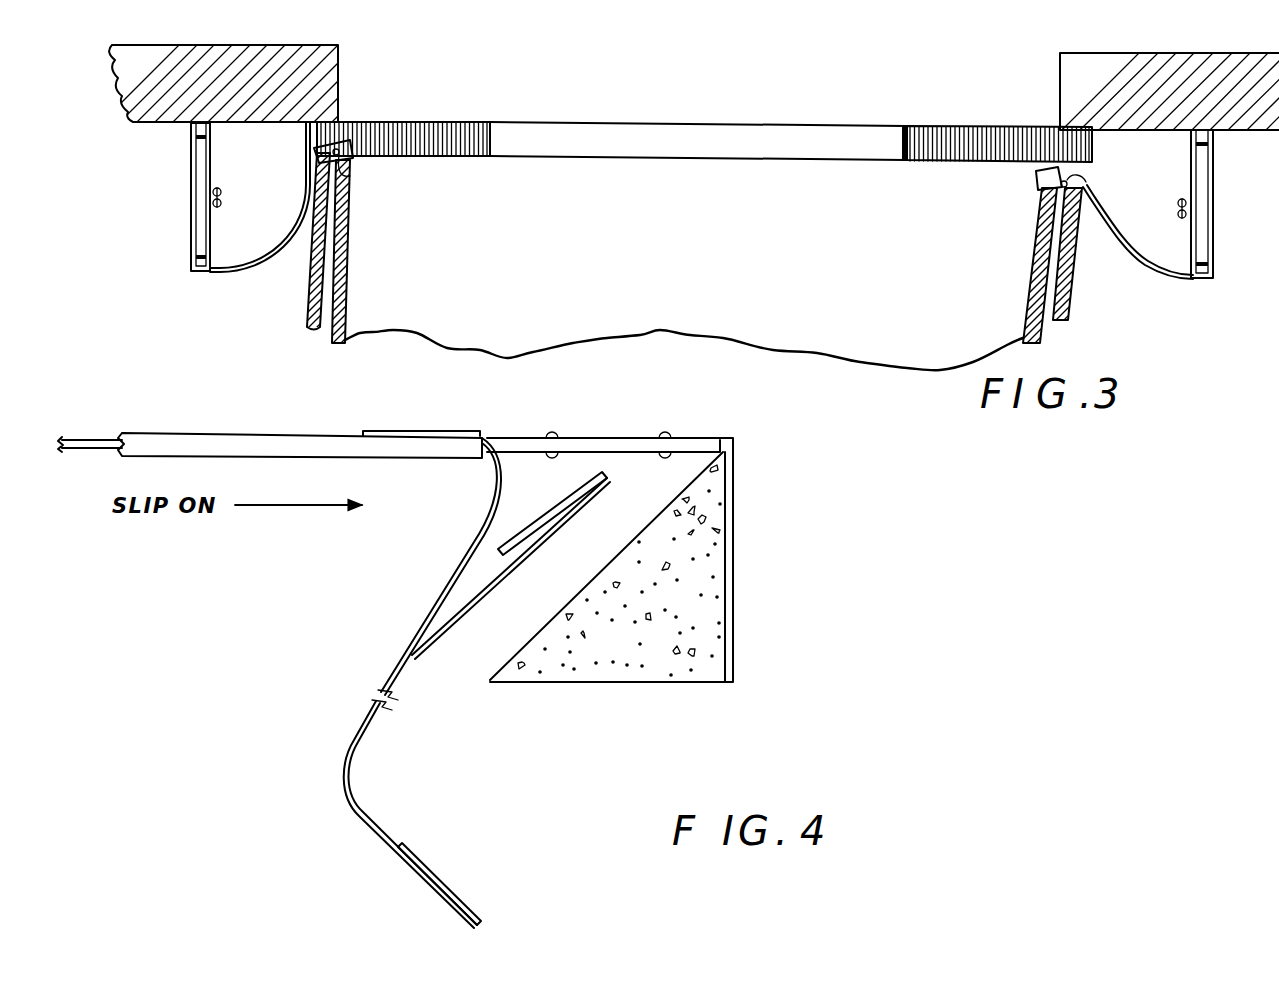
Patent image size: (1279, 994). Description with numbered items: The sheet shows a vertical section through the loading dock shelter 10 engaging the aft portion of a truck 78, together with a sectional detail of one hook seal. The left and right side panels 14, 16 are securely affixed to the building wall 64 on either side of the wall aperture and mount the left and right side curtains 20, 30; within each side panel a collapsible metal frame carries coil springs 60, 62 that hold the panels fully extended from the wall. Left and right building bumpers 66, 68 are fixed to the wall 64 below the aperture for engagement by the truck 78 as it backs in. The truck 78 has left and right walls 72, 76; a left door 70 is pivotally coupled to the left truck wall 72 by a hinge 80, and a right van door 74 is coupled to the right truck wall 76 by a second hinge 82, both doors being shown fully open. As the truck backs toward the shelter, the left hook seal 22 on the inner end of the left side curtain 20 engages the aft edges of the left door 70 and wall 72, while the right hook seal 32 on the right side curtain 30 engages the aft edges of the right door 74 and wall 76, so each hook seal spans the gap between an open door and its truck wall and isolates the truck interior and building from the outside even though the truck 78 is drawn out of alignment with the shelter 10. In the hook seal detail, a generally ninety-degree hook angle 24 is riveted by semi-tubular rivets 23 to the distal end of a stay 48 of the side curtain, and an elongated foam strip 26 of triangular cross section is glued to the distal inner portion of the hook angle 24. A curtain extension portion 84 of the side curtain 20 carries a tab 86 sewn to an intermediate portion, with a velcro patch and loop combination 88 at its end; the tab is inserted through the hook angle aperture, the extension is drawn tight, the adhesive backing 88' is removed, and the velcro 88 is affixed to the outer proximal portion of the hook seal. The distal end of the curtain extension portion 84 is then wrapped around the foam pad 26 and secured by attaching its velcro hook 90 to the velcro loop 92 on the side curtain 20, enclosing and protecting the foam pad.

In FIG. 3, the loading dock shelter 10 is at (152, 184).
In FIG. 3, the left side panel 14 is at (186, 226).
In FIG. 3, the right side panel 16 is at (1205, 192).
In FIG. 3, the left side curtain 20 is at (252, 273).
In FIG. 4, the left side curtain 20 is at (290, 585).
In FIG. 3, the left hook seal 22 is at (353, 158).
In FIG. 4, the left hook seal 22 is at (738, 568).
In FIG. 4, the semi-tubular rivets 23 is at (667, 436).
In FIG. 4, the hook angle 24 is at (735, 497).
In FIG. 4, the foam strip 26 is at (603, 662).
In FIG. 3, the right side curtain 30 is at (1133, 268).
In FIG. 3, the right hook seal 32 is at (1036, 178).
In FIG. 4, the stay 48 is at (86, 449).
In FIG. 3, the coil springs 60 is at (262, 177).
In FIG. 3, the coil springs 62 is at (1172, 207).
In FIG. 3, the wall 64 is at (318, 72).
In FIG. 3, the left building bumper 66 is at (452, 140).
In FIG. 3, the right building bumper 68 is at (920, 158).
In FIG. 3, the left door 70 is at (312, 326).
In FIG. 3, the left truck wall 72 is at (344, 280).
In FIG. 3, the right van door 74 is at (1072, 285).
In FIG. 3, the right truck wall 76 is at (1033, 283).
In FIG. 3, the truck 78 is at (641, 342).
In FIG. 3, the hinge 80 is at (340, 165).
In FIG. 3, the second hinge 82 is at (1078, 177).
In FIG. 4, the curtain extension portion 84 is at (466, 560).
In FIG. 4, the tab 86 is at (453, 617).
In FIG. 4, the velcro patch and loop combination 88 is at (552, 513).
In FIG. 4, the adhesive backing 88' is at (622, 472).
In FIG. 4, the velcro hook 90 is at (443, 877).
In FIG. 4, the velcro loop 92 is at (390, 432).